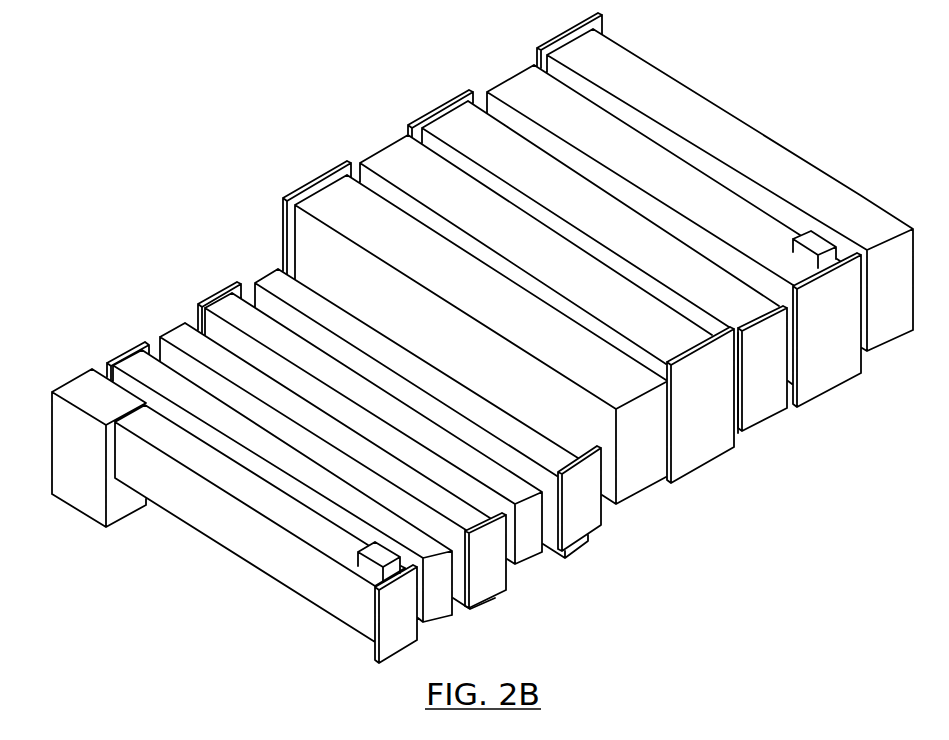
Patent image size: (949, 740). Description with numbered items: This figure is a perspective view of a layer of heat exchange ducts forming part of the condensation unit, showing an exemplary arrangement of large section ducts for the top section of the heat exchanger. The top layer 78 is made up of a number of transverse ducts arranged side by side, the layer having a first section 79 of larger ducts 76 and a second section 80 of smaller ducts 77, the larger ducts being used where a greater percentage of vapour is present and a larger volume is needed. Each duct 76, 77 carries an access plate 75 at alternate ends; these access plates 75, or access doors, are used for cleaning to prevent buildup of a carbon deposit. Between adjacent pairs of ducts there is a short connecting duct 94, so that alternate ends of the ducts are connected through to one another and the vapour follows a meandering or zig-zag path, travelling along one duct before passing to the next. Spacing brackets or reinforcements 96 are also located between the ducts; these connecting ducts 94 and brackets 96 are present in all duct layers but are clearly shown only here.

The access plate 75 is at (318, 185).
The transverse duct 76 is at (762, 400).
The smaller duct 77 is at (578, 522).
The top layer 78 is at (210, 156).
The first section 79 is at (445, 126).
The second section 80 is at (168, 332).
The short connecting duct 94 is at (813, 232).
The spacing bracket 96 is at (537, 50).